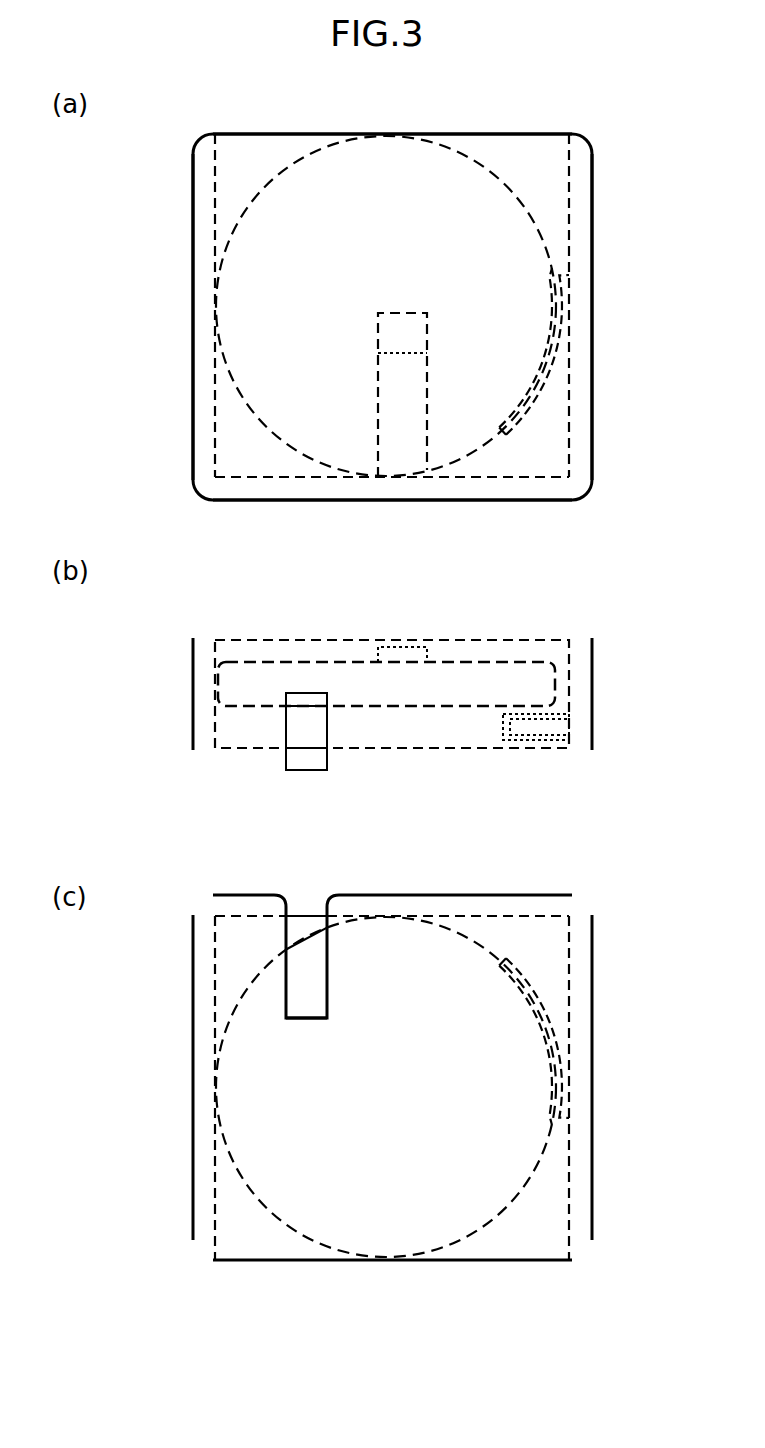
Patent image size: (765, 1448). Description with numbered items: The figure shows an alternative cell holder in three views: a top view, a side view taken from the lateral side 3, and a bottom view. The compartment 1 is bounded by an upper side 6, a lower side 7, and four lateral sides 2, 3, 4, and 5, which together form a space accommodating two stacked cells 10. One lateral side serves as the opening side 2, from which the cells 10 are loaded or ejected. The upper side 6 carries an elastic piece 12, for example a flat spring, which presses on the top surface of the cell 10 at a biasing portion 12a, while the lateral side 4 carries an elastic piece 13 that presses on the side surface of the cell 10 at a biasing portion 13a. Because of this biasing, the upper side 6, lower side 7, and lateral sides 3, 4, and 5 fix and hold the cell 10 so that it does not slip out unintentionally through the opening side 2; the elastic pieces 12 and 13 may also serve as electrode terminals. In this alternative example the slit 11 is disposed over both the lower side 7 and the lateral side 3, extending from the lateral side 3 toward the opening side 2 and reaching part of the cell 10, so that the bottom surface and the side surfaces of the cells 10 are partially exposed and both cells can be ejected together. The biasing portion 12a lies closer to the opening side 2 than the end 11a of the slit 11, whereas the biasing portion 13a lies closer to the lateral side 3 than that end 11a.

The compartment 1 is at (628, 126).
The opening side 2 is at (493, 134).
The lateral side 3 is at (493, 500).
The lateral side 4 is at (592, 254).
The lateral side 5 is at (193, 229).
The upper side 6 is at (545, 180).
The lower side 7 is at (545, 1205).
The cell 10 is at (320, 182).
The slit 11 is at (292, 719).
The end of the slit 11a is at (307, 1022).
The elastic piece 12 is at (400, 435).
The biasing portion 12a is at (405, 350).
The elastic piece 13 is at (532, 406).
The biasing portion 13a is at (532, 384).